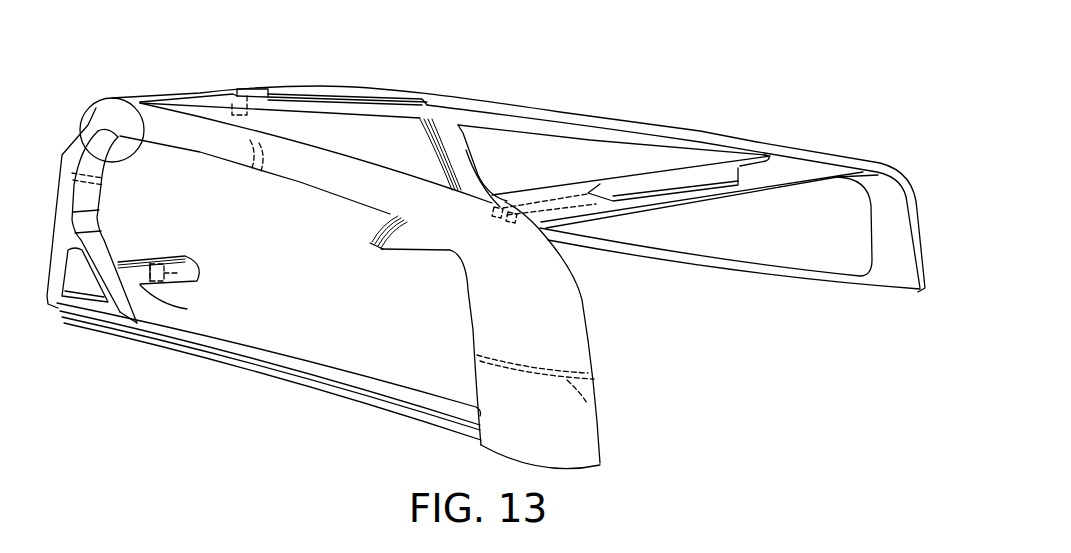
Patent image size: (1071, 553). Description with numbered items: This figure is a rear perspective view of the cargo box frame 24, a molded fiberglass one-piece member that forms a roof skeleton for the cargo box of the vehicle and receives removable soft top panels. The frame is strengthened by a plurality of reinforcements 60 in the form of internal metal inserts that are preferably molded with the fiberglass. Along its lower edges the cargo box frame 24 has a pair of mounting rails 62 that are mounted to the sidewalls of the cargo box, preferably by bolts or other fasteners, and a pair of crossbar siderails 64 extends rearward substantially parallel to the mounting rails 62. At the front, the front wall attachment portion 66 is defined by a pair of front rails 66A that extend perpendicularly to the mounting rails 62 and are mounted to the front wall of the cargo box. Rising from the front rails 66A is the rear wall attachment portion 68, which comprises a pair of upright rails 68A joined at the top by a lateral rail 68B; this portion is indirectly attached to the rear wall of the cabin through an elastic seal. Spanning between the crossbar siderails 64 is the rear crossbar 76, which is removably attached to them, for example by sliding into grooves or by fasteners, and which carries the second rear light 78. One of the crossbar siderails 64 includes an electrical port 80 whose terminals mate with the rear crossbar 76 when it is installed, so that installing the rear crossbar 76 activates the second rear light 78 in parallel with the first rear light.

The cargo box frame 24 is at (678, 95).
The reinforcements 60 is at (222, 88).
The mounting rails 62 is at (302, 367).
The crossbar siderails 64 is at (607, 133).
The front wall attachment portion 66 is at (155, 239).
The front rails 66A is at (187, 309).
The rear wall attachment portion 68 is at (281, 69).
The upright rails 68A is at (100, 155).
The lateral rail 68B is at (322, 109).
The rear crossbar 76 is at (783, 168).
The second rear light 78 is at (700, 182).
The electrical port 80 is at (502, 229).